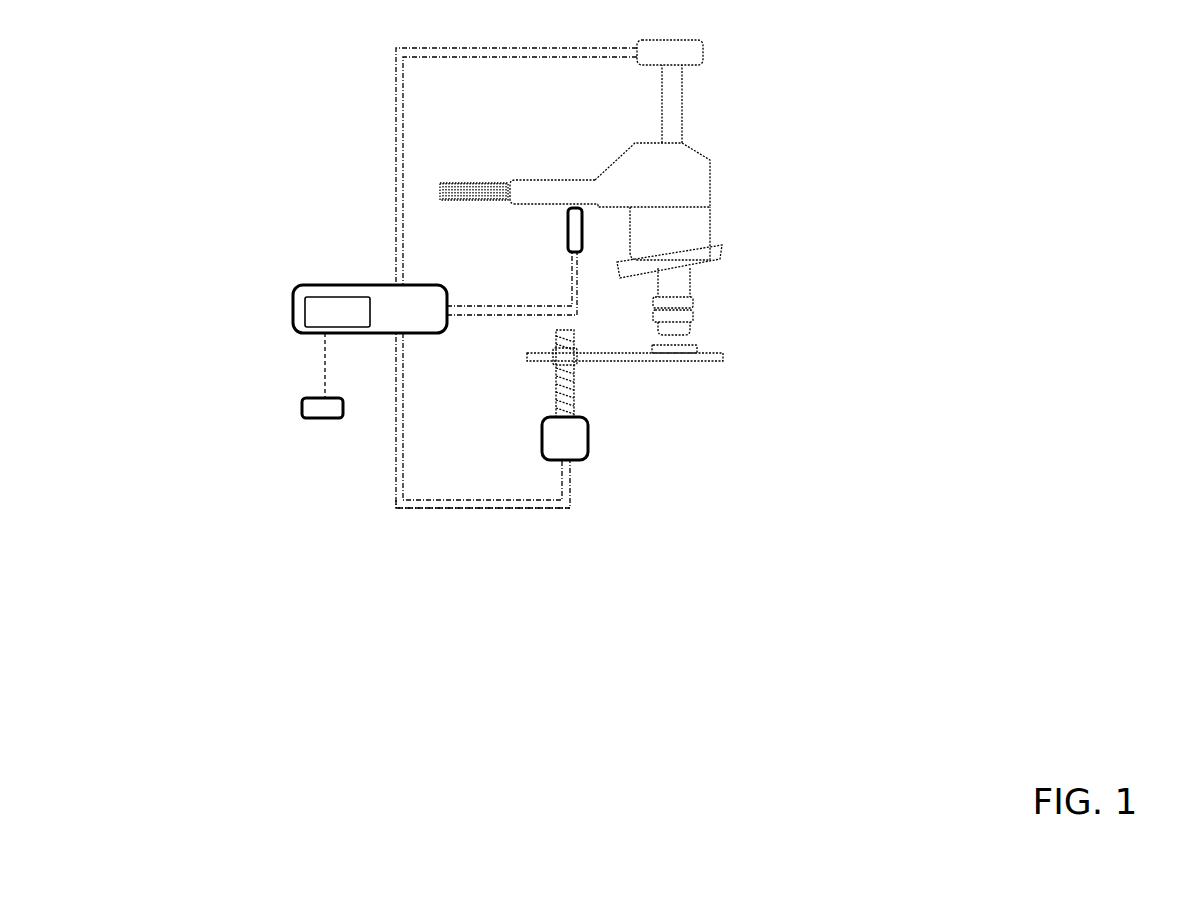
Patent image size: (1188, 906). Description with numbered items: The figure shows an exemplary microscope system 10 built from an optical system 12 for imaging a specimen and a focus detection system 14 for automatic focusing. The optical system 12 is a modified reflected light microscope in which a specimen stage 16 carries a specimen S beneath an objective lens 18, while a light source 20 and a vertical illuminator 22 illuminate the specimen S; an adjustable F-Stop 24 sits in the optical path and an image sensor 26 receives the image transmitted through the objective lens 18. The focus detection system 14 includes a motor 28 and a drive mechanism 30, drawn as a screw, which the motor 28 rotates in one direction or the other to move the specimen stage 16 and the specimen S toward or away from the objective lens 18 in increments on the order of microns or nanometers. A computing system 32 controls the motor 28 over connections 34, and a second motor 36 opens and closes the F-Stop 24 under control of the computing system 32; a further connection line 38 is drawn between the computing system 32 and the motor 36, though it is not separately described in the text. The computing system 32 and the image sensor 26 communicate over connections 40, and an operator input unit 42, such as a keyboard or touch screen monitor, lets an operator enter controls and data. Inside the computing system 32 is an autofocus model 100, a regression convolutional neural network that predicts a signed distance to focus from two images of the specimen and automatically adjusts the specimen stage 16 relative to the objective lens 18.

The microscope system 10 is at (274, 128).
The optical system 12 is at (760, 218).
The focus detection system 14 is at (280, 342).
The specimen stage 16 is at (592, 363).
The objective lens 18 is at (678, 284).
The light source 20 is at (475, 186).
The vertical illuminator 22 is at (700, 170).
The adjustable F-Stop 24 is at (573, 187).
The image sensor 26 is at (694, 54).
The motor 28 is at (560, 440).
The drive mechanism 30 is at (557, 380).
The computing system 32 is at (393, 305).
The connections 34 is at (430, 505).
The motor 36 is at (577, 228).
The signal line 38 is at (568, 312).
The connections 40 is at (437, 53).
The operator input unit 42 is at (308, 408).
The autofocus model 100 is at (337, 312).
The specimen S is at (690, 347).